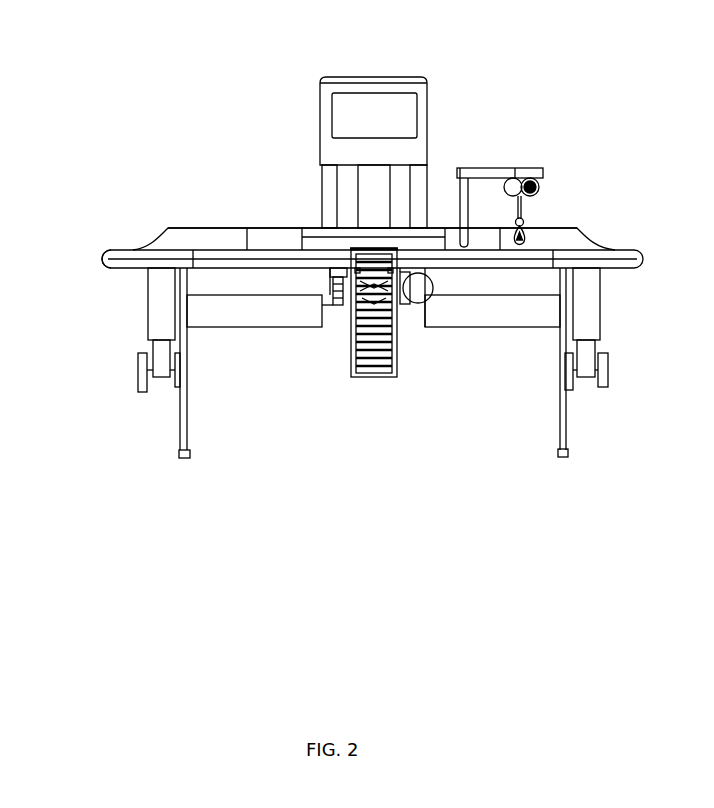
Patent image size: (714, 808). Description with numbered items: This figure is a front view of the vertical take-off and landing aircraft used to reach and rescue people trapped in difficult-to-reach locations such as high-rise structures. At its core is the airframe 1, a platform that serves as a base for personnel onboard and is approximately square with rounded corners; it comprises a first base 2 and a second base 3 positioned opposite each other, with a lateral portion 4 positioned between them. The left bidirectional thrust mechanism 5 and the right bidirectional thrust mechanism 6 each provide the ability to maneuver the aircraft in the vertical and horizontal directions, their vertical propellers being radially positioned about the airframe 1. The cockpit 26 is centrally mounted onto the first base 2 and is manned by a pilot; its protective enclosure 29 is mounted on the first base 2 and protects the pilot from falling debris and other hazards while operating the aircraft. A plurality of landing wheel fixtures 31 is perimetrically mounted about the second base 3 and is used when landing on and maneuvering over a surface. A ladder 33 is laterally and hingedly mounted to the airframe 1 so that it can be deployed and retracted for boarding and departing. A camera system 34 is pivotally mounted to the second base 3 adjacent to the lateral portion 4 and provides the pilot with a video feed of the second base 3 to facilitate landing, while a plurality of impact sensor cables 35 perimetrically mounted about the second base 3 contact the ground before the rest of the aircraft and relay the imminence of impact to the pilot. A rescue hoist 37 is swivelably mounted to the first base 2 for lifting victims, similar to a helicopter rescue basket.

The airframe 1 is at (176, 214).
The first base 2 is at (131, 250).
The second base 3 is at (118, 270).
The lateral portion 4 is at (98, 258).
The left bidirectional thrust mechanism 5 is at (527, 347).
The right bidirectional thrust mechanism 6 is at (243, 350).
The cockpit 26 is at (314, 76).
The protective enclosure 29 is at (324, 112).
The landing wheel fixtures 31 is at (146, 388).
The ladder 33 is at (397, 376).
The camera system 34 is at (424, 293).
The impact sensor cables 35 is at (183, 457).
The rescue hoist 37 is at (542, 172).